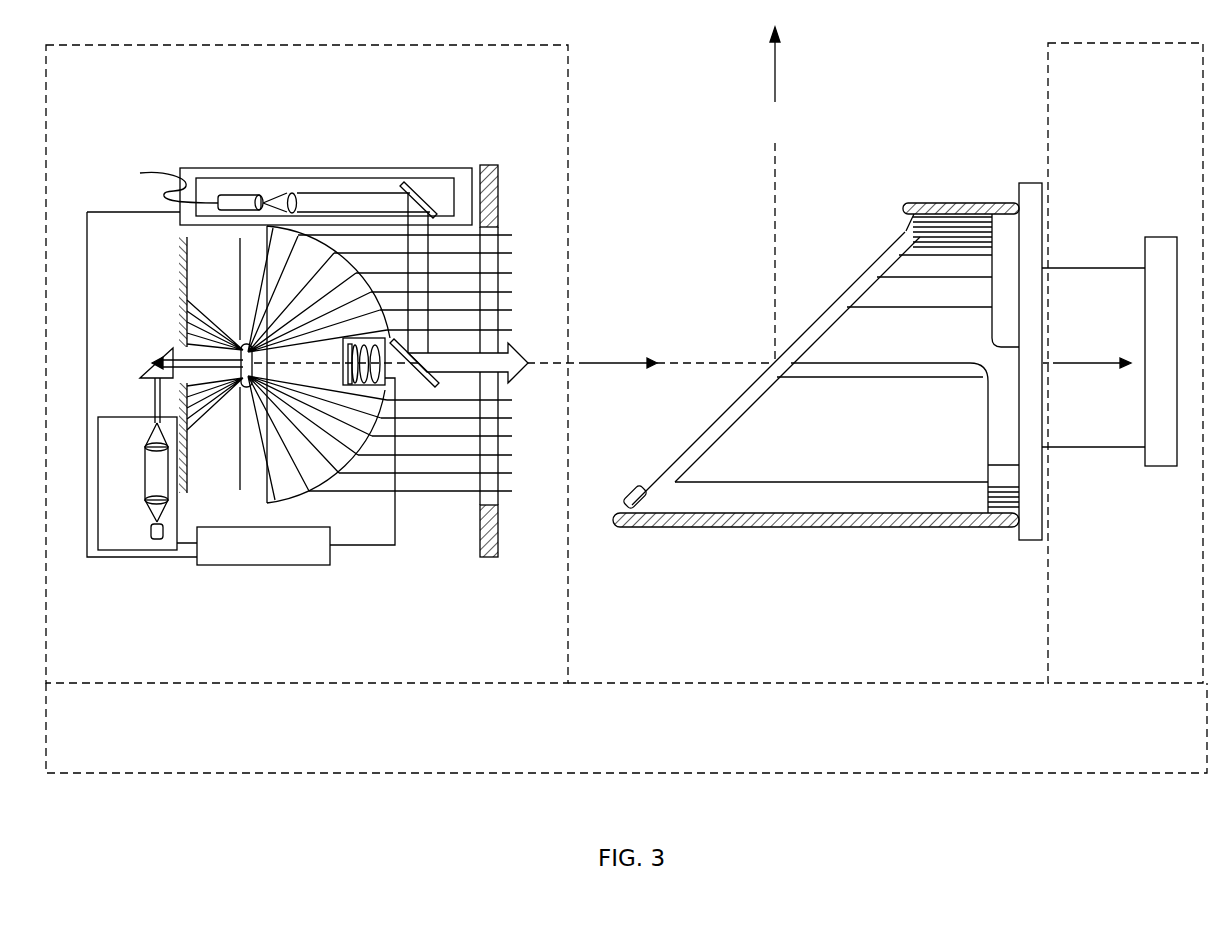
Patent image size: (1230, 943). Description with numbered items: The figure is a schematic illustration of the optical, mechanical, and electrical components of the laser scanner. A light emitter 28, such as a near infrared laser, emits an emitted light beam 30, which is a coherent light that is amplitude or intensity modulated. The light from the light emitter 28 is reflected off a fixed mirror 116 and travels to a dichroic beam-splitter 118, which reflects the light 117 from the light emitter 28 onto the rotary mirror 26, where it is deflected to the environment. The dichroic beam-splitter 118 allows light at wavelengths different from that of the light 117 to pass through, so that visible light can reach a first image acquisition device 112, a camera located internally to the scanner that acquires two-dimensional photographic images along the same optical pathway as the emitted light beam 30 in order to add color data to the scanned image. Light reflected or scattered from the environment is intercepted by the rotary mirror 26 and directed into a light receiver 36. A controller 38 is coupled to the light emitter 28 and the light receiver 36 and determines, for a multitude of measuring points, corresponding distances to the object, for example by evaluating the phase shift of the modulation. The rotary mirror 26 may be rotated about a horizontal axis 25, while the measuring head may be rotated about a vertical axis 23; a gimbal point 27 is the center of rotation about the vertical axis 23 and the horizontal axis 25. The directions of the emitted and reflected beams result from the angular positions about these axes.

The light emitter 28 is at (240, 192).
The fixed mirror 116 is at (421, 192).
The light 117 is at (417, 265).
The first image acquisition device 112 is at (365, 385).
The dichroic beam-splitter 118 is at (420, 388).
The light receiver 36 is at (123, 489).
The controller 38 is at (268, 566).
The emitted light beam 30 is at (600, 350).
The gimbal point 27 is at (773, 362).
The vertical axis 23 is at (775, 80).
The rotary mirror 26 is at (877, 259).
The horizontal axis 25 is at (1067, 362).